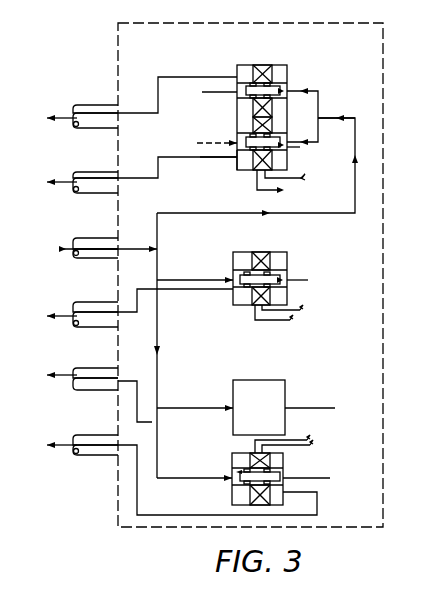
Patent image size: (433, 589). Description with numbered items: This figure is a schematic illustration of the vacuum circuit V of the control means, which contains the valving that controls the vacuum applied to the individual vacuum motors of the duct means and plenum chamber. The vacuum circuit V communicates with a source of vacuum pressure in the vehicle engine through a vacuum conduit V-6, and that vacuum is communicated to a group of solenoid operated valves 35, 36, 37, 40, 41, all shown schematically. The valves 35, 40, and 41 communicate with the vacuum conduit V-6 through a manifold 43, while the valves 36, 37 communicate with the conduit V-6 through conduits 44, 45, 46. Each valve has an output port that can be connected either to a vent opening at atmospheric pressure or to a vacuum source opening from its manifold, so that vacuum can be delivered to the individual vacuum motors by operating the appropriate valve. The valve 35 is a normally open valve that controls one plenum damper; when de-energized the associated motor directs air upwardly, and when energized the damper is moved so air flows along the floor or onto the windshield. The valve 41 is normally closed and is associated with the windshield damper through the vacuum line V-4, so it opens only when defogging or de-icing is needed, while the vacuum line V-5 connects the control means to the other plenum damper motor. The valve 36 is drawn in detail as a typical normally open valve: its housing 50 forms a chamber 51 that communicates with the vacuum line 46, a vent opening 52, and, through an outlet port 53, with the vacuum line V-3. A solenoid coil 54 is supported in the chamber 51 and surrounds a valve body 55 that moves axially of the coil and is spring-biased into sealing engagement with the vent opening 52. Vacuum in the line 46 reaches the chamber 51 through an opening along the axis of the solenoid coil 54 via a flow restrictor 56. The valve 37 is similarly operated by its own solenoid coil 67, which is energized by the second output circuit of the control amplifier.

The vacuum circuit V is at (390, 323).
The vacuum line V-3 is at (104, 172).
The vacuum line V-4 is at (86, 302).
The vacuum line V-5 is at (104, 435).
The vacuum conduit V-6 is at (106, 236).
The solenoid operated valve 35 is at (288, 457).
The solenoid operated valve 36 is at (264, 121).
The solenoid operated valve 37 is at (243, 65).
The solenoid operated valve 40 is at (282, 372).
The solenoid operated valve 41 is at (280, 254).
The manifold 43 is at (158, 324).
The conduit 44 is at (198, 215).
The conduit 45 is at (310, 92).
The vacuum line 46 is at (322, 143).
The housing 50 is at (273, 181).
The chamber 51 is at (241, 167).
The vent opening 52 is at (235, 142).
The outlet port 53 is at (232, 160).
The solenoid coil 54 is at (264, 126).
The valve body 55 is at (242, 135).
The flow restrictor 56 is at (289, 148).
The solenoid coil 67 is at (264, 65).